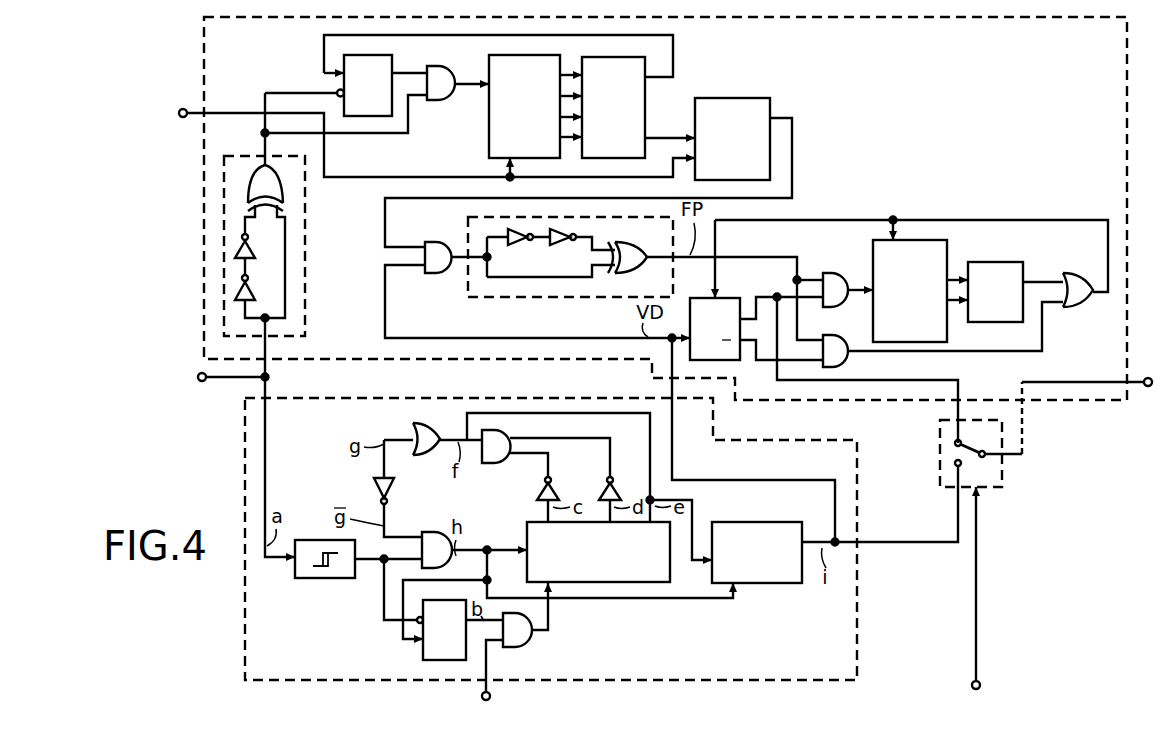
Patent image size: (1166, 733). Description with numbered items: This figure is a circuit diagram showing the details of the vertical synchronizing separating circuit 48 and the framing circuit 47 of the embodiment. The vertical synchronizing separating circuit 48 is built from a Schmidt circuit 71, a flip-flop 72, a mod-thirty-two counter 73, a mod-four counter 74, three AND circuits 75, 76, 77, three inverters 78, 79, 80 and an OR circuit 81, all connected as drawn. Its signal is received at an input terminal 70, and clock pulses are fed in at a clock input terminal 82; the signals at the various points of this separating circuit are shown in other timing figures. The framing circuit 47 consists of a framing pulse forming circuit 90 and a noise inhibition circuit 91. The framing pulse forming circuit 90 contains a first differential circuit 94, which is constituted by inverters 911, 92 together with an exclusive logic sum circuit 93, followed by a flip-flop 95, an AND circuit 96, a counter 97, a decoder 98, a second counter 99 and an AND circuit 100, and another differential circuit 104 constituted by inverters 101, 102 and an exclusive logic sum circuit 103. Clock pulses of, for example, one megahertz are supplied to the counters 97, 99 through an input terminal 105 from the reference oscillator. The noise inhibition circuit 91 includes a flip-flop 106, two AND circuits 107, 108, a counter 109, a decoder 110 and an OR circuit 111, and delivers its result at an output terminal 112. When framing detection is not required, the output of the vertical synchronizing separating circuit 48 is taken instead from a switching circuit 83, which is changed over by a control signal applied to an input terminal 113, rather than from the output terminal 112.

The framing circuit 47 is at (1129, 163).
The vertical synchronizing separating circuit 48 is at (859, 521).
The input terminal 70 is at (196, 384).
The Schmidt circuit 71 is at (312, 540).
The flip-flop 72 is at (422, 656).
The mod-32 counter 73 is at (527, 535).
The mod-4 counter 74 is at (772, 522).
The AND circuit 75 is at (494, 463).
The AND circuit 76 is at (433, 532).
The AND circuit 77 is at (535, 645).
The inverter 78 is at (613, 482).
The inverter 79 is at (557, 490).
The inverter 80 is at (375, 487).
The OR circuit 81 is at (415, 430).
The clock input terminal 82 is at (490, 691).
The switching circuit 83 is at (1004, 471).
The framing pulse forming circuit 90 is at (711, 71).
The noise inhibition circuit 91 is at (981, 218).
The inverter 92 is at (251, 249).
The inverter 911 is at (251, 291).
The exclusive logic sum circuit 93 is at (272, 180).
The differential circuit 94 is at (306, 298).
The flip-flop 95 is at (392, 61).
The AND circuit 96 is at (450, 71).
The counter 97 is at (489, 134).
The decoder 98 is at (648, 112).
The counter 99 is at (762, 107).
The AND circuit 100 is at (430, 244).
The inverter 101 is at (515, 247).
The inverter 102 is at (562, 247).
The exclusive logic sum circuit 103 is at (641, 270).
The differential circuit 104 is at (558, 300).
The input terminal 105 is at (179, 108).
The flip-flop 106 is at (738, 300).
The AND circuit 107 is at (826, 272).
The AND circuit 108 is at (838, 338).
The counter 109 is at (945, 256).
The decoder 110 is at (1015, 262).
The OR circuit 111 is at (1080, 306).
The output terminal 112 is at (1145, 392).
The input terminal 113 is at (982, 682).